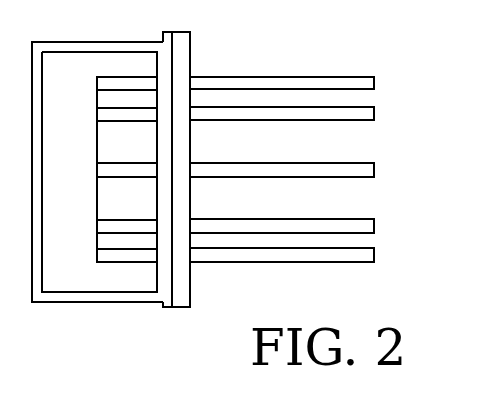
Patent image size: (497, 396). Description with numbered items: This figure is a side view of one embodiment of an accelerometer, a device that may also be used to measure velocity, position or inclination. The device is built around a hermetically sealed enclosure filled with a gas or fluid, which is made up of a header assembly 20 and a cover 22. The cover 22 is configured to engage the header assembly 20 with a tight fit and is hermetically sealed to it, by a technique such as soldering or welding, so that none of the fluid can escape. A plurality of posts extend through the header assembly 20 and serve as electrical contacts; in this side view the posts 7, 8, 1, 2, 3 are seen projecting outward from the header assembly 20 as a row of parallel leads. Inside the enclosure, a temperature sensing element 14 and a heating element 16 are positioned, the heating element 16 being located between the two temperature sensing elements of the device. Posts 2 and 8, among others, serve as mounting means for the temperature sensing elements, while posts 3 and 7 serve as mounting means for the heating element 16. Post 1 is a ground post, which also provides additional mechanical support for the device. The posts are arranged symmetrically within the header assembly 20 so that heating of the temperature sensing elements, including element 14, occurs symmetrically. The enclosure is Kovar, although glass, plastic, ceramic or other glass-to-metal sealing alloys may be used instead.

The temperature sensing element 14 is at (97, 144).
The cover 22 is at (78, 299).
The heating element 16 is at (98, 240).
The header assembly 20 is at (187, 277).
The post 7 is at (293, 77).
The post 8 is at (362, 112).
The post 1 is at (355, 172).
The post 2 is at (347, 225).
The post 3 is at (343, 255).